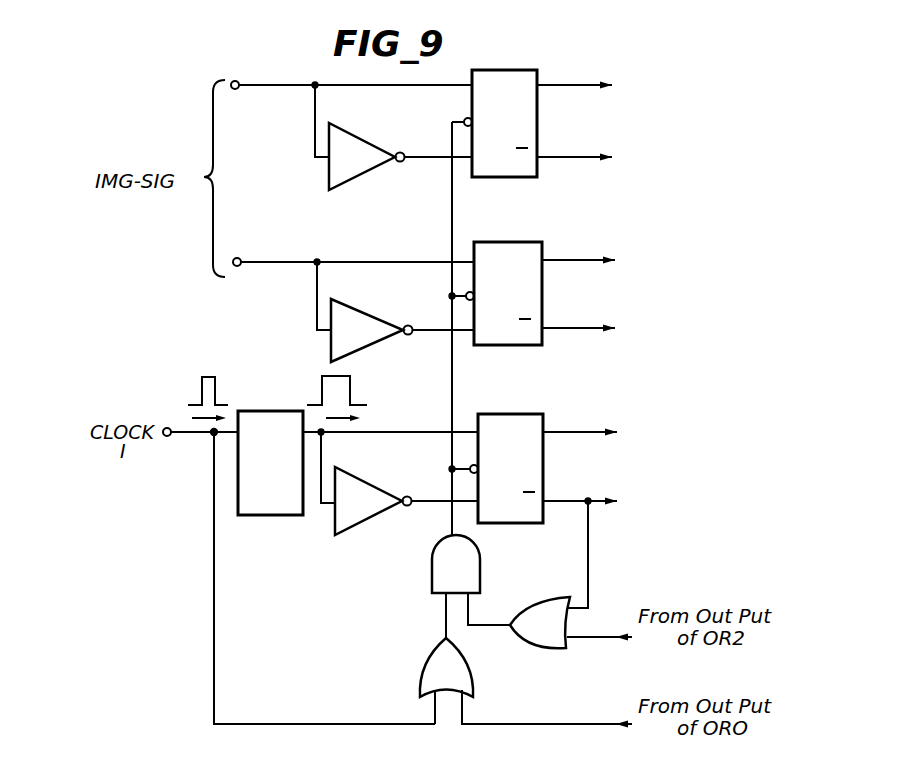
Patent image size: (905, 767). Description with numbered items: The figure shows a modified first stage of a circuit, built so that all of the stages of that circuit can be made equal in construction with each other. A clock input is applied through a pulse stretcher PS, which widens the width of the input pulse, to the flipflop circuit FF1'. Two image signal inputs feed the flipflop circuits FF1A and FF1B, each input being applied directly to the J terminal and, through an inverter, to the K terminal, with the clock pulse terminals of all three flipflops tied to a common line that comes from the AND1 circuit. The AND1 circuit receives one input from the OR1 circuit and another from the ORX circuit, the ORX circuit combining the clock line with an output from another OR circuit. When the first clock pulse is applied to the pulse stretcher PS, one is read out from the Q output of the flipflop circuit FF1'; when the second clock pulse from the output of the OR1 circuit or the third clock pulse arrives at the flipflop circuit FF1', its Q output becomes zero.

The pulse stretcher PS is at (270, 463).
The flip-flop circuit FF1A is at (504, 123).
The flip-flop circuit FF1B is at (508, 293).
The flipflop circuit FF1' is at (510, 468).
The AND circuit AND1 is at (456, 564).
The OR1 circuit OR1 is at (540, 622).
The OR circuit ORX is at (446, 667).